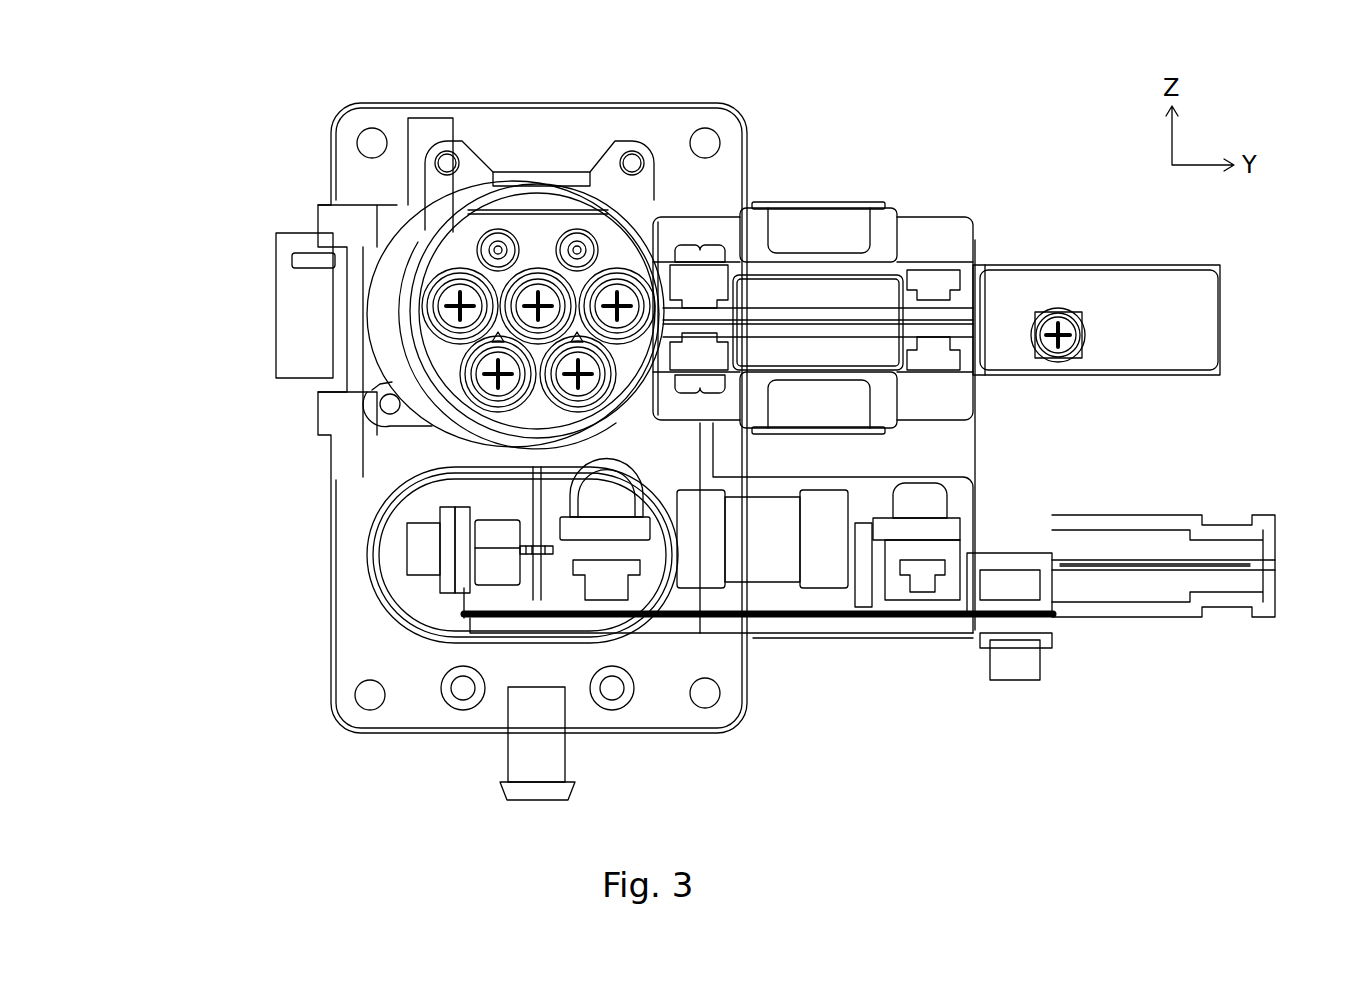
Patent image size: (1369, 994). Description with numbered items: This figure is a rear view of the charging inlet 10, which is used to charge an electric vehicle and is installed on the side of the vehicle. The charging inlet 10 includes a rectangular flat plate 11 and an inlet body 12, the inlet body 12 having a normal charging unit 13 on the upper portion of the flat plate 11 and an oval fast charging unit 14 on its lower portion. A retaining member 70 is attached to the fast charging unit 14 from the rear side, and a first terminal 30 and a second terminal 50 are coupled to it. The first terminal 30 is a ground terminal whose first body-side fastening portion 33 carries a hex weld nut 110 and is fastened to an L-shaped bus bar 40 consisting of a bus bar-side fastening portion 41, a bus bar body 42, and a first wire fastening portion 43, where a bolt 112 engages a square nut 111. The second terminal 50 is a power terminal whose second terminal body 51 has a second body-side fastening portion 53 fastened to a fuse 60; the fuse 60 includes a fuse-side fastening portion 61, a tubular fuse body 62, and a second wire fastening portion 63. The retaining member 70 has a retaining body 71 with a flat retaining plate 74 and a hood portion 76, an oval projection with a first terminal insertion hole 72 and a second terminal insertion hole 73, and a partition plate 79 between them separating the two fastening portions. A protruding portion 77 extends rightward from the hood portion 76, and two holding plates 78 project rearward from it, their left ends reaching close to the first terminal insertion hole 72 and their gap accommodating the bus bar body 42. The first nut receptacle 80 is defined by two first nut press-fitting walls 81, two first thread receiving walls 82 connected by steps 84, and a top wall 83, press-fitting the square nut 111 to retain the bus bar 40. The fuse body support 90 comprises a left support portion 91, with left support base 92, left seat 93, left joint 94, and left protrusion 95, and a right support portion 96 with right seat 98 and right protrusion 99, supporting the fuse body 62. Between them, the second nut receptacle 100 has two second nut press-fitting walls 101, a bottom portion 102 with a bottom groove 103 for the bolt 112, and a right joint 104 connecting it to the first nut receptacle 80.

The charging inlet 10 is at (282, 78).
The flat plate 11 is at (384, 118).
The inlet body 12 is at (195, 350).
The normal charging unit 13 is at (376, 320).
The fast charging unit 14 is at (373, 530).
The first terminal 30 is at (428, 603).
The first body-side fastening portion 33 is at (470, 575).
The bus bar 40 is at (810, 628).
The bus bar-side fastening portion 41 is at (440, 620).
The bus bar body 42 is at (764, 600).
The first wire fastening portion 43 is at (1050, 620).
The second terminal 50 is at (782, 485).
The second terminal body 51 is at (657, 776).
The second body-side fastening portion 53 is at (650, 600).
The fuse 60 is at (752, 637).
The fuse-side fastening portion 61 is at (662, 600).
The fuse body 62 is at (782, 560).
The second wire fastening portion 63 is at (907, 540).
The retaining member 70 is at (1267, 462).
The retaining body 71 is at (348, 609).
The first terminal insertion hole 72 is at (537, 557).
The second terminal insertion hole 73 is at (618, 540).
The retaining plate 74 is at (373, 585).
The hood portion 76 is at (427, 492).
The protruding portion 77 is at (686, 557).
The holding plates 78 is at (495, 610).
The partition plate 79 is at (470, 558).
The first nut receptacle 80 is at (1020, 660).
The first nut press-fitting walls 81 is at (1023, 597).
The first thread receiving walls 82 is at (1003, 577).
The top wall 83 is at (980, 557).
The steps 84 is at (980, 497).
The fuse body support 90 is at (955, 150).
The left support portion 91 is at (871, 498).
The left support base 92 is at (620, 600).
The left seat 93 is at (770, 476).
The left joint 94 is at (672, 605).
The left protrusion 95 is at (686, 600).
The right support portion 96 is at (873, 497).
The right seat 98 is at (858, 560).
The right protrusion 99 is at (862, 530).
The second nut receptacle 100 is at (930, 525).
The second nut press-fitting walls 101 is at (880, 580).
The bottom portion 102 is at (965, 612).
The bottom groove 103 is at (908, 590).
The right joint 104 is at (1003, 497).
The hex weld nut 110 is at (497, 530).
The square nut 111 is at (900, 570).
The bolt 112 is at (597, 513).